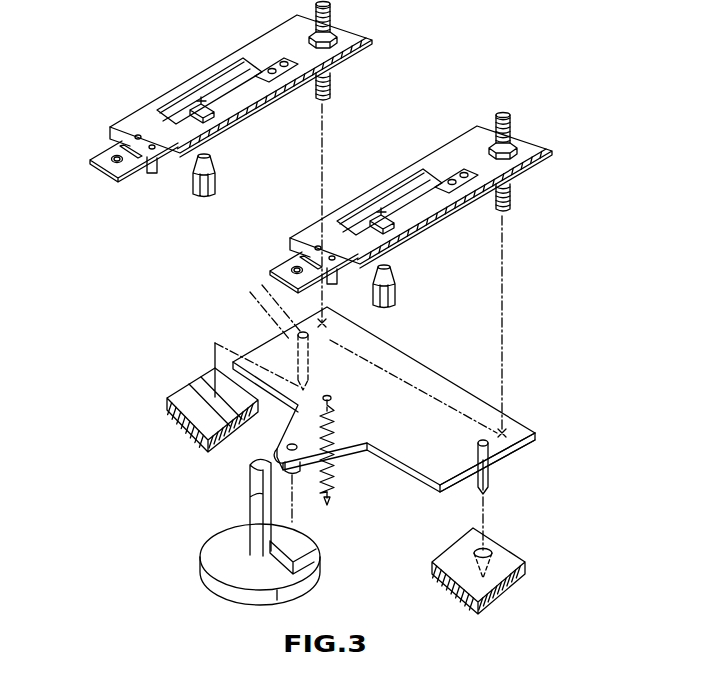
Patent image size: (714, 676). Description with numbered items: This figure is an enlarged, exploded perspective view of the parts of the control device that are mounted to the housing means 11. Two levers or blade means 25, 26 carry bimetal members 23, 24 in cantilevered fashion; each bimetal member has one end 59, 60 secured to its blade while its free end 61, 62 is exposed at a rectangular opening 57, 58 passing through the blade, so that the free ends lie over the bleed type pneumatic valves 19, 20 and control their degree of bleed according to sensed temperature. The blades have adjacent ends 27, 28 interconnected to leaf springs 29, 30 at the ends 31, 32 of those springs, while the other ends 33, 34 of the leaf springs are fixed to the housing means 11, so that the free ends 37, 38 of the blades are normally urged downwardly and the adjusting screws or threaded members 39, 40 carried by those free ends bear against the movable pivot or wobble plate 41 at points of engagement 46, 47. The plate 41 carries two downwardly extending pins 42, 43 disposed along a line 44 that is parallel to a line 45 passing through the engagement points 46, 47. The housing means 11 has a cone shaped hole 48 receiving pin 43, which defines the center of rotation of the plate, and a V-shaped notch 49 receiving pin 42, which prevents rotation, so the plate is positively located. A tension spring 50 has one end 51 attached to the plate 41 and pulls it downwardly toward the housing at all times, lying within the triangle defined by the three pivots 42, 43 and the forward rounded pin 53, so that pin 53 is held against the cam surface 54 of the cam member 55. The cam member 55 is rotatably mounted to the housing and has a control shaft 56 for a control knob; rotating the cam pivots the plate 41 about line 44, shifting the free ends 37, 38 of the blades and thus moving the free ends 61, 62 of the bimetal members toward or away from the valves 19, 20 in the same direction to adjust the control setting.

The housing means 11 is at (172, 412).
The bleed type pneumatic valve 19 is at (214, 162).
The bleed type pneumatic valve 20 is at (407, 284).
The bimetal member 23 is at (232, 92).
The bimetal member 24 is at (452, 204).
The lever or blade means 25 is at (293, 43).
The lever or blade means 26 is at (421, 191).
The end of blade 27 is at (158, 130).
The end of blade 28 is at (355, 206).
The leaf spring 29 is at (105, 153).
The leaf spring 30 is at (292, 266).
The end of leaf spring 31 is at (147, 113).
The end of leaf spring 32 is at (310, 242).
The end of leaf spring 33 is at (112, 173).
The end of leaf spring 34 is at (270, 281).
The free end of blade 37 is at (347, 35).
The free end of blade 38 is at (537, 132).
The adjusting screw or threaded member 39 is at (332, 85).
The adjusting screw or threaded member 40 is at (531, 306).
The pivot or wobble plate 41 is at (422, 373).
The pin 42 is at (298, 341).
The pin 43 is at (490, 480).
The line 44 is at (530, 472).
The line 45 is at (537, 457).
The point of engagement 46 is at (326, 323).
The point of engagement 47 is at (506, 433).
The cone shaped hole 48 is at (490, 553).
The V-shaped notch 49 is at (200, 385).
The tension spring 50 is at (334, 472).
The end of tension spring 51 is at (324, 415).
The forward rounded pin 53 is at (300, 470).
The cam surface 54 is at (307, 548).
The cam member 55 is at (227, 592).
The control shaft 56 is at (257, 507).
The rectangular opening 57 is at (178, 110).
The rectangular opening 58 is at (383, 202).
The end of bimetal member 59 is at (277, 62).
The end of bimetal member 60 is at (462, 200).
The free end of bimetal member 61 is at (200, 105).
The free end of bimetal member 62 is at (364, 196).